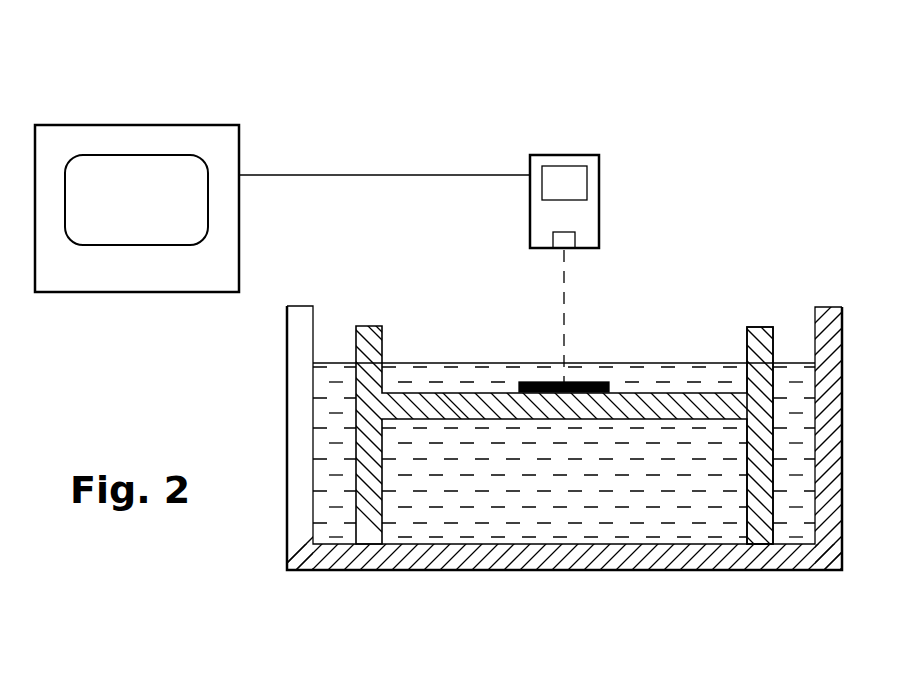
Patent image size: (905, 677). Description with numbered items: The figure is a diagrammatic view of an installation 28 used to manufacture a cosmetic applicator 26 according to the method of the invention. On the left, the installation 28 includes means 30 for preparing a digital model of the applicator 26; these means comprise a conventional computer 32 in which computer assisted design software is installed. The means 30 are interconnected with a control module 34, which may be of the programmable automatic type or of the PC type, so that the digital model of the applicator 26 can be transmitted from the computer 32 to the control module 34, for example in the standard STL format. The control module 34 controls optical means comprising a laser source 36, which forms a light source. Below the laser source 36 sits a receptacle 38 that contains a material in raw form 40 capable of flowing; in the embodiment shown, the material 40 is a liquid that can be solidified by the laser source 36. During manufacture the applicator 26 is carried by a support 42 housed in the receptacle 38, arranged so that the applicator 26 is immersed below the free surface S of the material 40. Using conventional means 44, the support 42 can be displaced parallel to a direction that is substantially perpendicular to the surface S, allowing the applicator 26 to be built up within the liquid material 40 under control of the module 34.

The applicator 26 is at (585, 382).
The installation 28 is at (703, 244).
The means for preparing a digital model 30 is at (183, 126).
The computer 32 is at (110, 140).
The control module 34 is at (560, 178).
The laser source 36 is at (560, 238).
The receptacle 38 is at (830, 327).
The material in raw form 40 is at (660, 498).
The support 42 is at (472, 408).
The means for displacing the support 44 is at (757, 499).
The free surface S is at (690, 362).